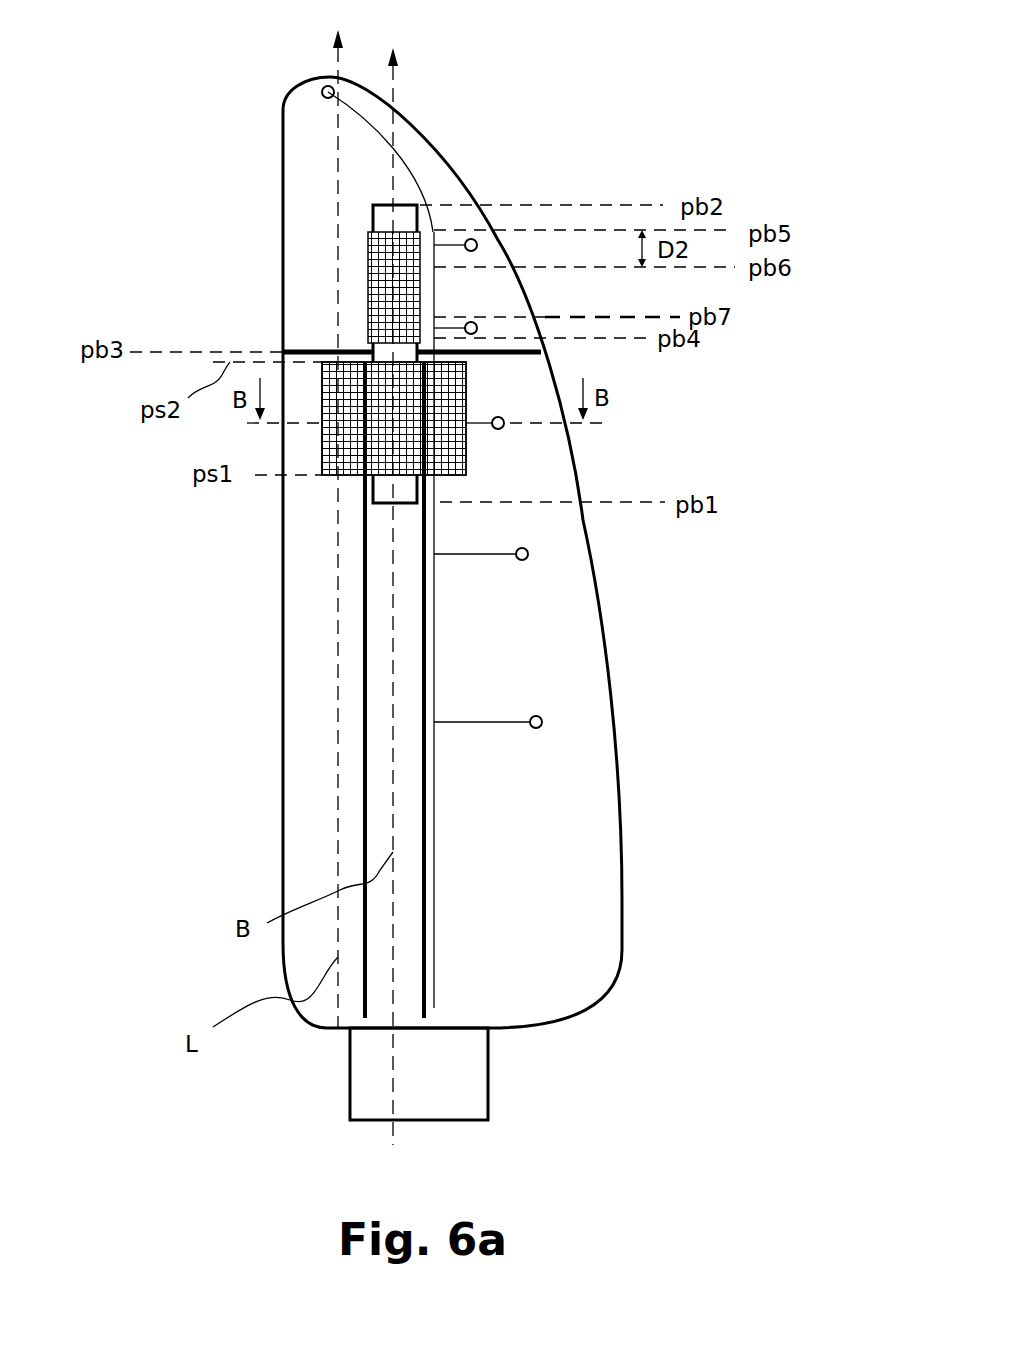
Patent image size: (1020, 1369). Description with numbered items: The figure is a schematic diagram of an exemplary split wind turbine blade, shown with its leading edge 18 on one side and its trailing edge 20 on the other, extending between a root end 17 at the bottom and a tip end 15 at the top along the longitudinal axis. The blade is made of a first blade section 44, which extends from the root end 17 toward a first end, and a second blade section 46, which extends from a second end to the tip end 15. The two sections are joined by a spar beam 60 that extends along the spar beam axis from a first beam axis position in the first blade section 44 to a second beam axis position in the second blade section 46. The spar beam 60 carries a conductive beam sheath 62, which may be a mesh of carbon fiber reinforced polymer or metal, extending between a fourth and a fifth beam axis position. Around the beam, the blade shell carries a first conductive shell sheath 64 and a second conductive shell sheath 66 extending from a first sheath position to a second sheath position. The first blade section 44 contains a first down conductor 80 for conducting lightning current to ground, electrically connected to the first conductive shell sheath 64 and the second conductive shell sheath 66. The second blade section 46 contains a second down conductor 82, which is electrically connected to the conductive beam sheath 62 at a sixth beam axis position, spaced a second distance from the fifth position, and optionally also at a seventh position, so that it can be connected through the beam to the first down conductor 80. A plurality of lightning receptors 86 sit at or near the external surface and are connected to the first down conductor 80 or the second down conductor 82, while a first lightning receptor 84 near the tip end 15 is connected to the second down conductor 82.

The tip end 15 is at (335, 75).
The root end 17 is at (457, 1120).
The leading edge 18 is at (282, 755).
The trailing edge 20 is at (617, 738).
The first blade section 44 is at (205, 676).
The second blade section 46 is at (236, 186).
The spar beam 60 is at (403, 217).
The conductive beam sheath 62 is at (368, 292).
The first conductive shell sheath 64 is at (280, 418).
The second conductive shell sheath 66 is at (328, 440).
The first down conductor 80 is at (435, 693).
The second down conductor 82 is at (403, 157).
The first lightning receptor 84 is at (322, 93).
The lightning receptors 86 is at (477, 247).